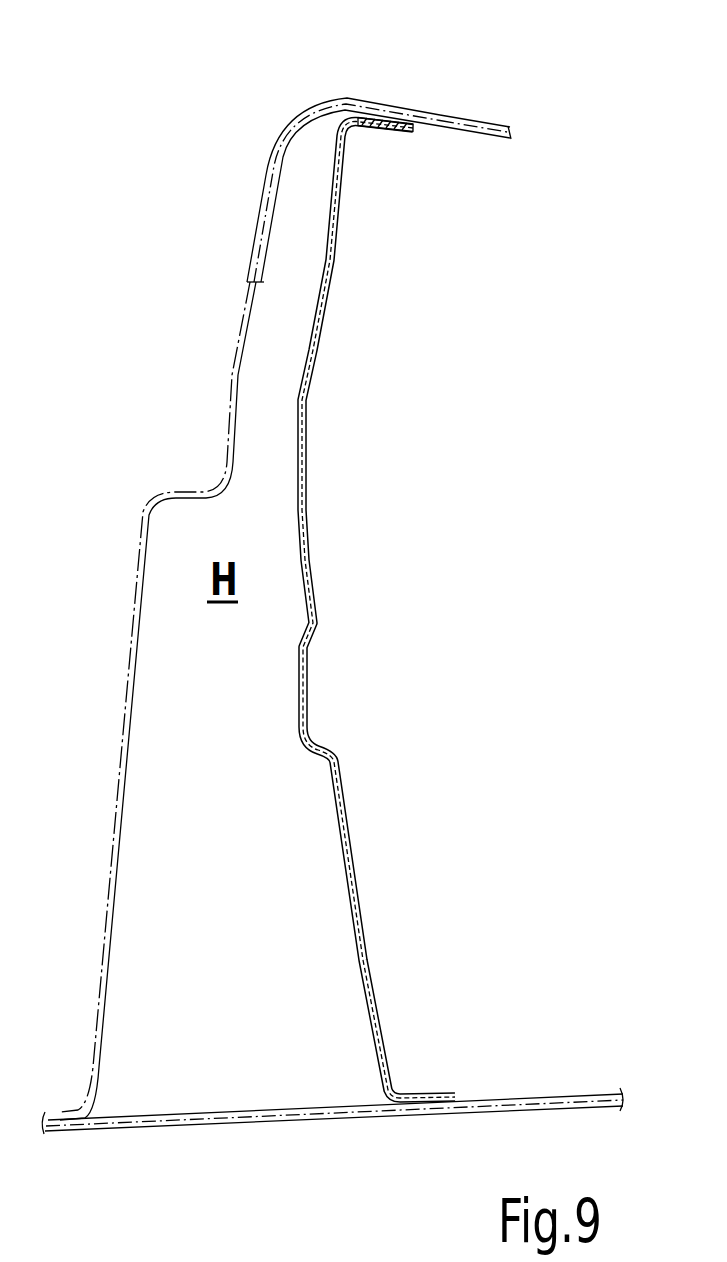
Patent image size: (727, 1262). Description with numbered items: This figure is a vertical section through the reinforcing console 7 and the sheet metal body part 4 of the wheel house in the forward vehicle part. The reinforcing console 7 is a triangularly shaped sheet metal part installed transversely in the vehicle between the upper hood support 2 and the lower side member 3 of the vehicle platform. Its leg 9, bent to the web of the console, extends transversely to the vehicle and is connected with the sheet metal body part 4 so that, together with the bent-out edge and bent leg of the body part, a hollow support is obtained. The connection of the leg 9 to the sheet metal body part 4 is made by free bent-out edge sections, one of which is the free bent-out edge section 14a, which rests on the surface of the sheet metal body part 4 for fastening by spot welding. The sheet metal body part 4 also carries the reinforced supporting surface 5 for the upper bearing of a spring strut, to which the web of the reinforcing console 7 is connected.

The upper hood support 2 is at (450, 50).
The lower side member 3 is at (543, 1097).
The sheet metal body part 4 is at (130, 627).
The reinforced supporting surface 5 is at (503, 188).
The reinforcing console 7 is at (423, 532).
The leg 9 is at (358, 395).
The free bent-out edge section 14a is at (403, 197).